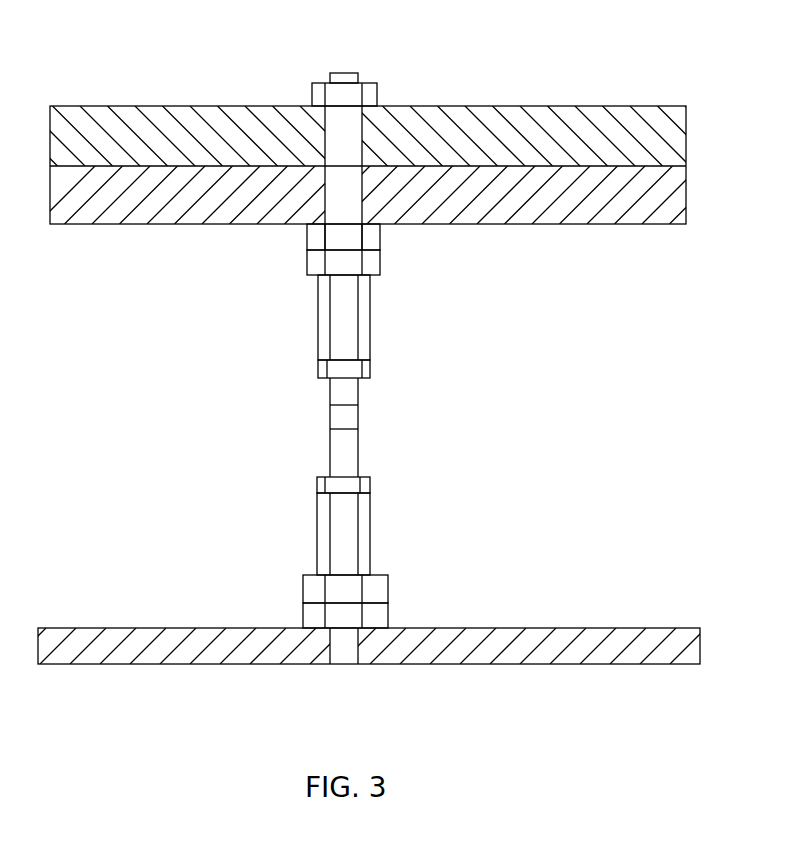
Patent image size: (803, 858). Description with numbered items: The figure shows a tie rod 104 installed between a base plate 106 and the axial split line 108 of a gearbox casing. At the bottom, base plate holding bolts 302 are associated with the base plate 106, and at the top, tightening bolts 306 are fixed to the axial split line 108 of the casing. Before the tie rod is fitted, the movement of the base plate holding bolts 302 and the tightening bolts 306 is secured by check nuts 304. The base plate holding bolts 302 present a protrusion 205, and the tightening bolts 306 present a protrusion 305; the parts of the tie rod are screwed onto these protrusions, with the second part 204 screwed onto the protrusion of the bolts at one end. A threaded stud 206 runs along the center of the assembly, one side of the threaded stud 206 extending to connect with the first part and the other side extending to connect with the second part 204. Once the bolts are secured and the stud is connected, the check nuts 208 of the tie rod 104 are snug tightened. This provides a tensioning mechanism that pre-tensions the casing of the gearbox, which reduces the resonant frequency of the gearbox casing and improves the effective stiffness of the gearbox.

The tie rod 104 is at (290, 412).
The base plate 106 is at (80, 628).
The axial split line 108 is at (120, 166).
The second part 204 is at (370, 530).
The protrusion 205 is at (338, 617).
The threaded stud 206 is at (358, 418).
The check nuts 208 is at (370, 369).
The base plate holding bolts 302 is at (380, 238).
The check nuts 304 is at (307, 263).
The protrusion 305 is at (343, 239).
The tightening bolts 306 is at (388, 608).